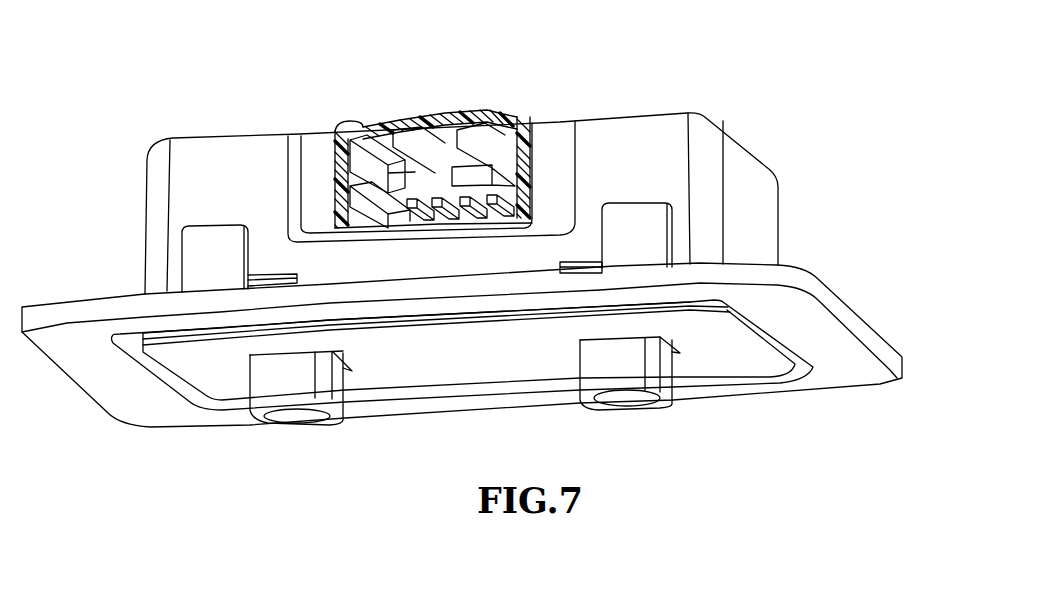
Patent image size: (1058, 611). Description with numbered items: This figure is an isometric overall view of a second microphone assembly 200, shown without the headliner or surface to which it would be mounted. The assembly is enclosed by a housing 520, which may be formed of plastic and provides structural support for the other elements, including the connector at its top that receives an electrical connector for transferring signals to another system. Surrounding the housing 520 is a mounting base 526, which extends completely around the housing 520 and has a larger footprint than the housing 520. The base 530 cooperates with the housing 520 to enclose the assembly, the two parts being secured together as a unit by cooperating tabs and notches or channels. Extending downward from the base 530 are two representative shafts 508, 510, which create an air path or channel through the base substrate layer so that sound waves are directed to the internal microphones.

The connector assembly 200 is at (479, 253).
The shaft 508 is at (300, 413).
The shaft 510 is at (627, 400).
The housing 520 is at (747, 208).
The mounting base 526 is at (863, 378).
The base 530 is at (720, 358).